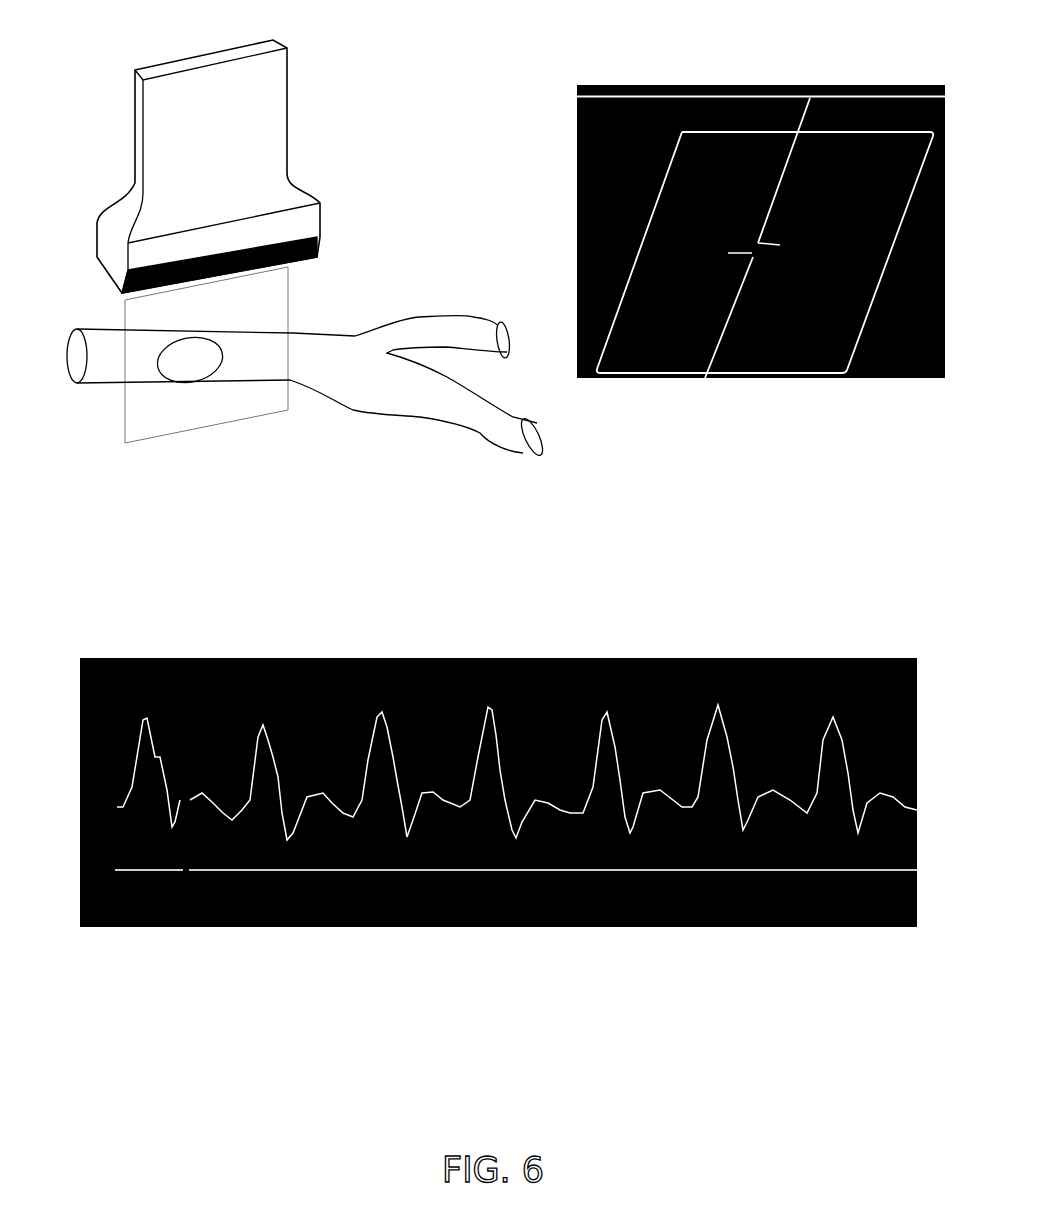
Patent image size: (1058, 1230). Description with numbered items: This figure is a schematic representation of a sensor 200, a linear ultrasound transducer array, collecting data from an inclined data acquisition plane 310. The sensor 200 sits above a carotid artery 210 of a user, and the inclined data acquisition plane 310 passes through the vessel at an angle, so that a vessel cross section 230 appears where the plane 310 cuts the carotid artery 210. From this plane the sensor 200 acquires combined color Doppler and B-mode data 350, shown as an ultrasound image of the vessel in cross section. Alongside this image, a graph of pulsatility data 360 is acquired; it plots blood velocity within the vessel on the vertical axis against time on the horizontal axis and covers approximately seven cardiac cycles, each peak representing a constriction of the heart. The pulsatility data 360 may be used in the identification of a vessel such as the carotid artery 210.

The sensor 200 is at (287, 102).
The carotid artery 210 is at (95, 400).
The vessel cross section 230 is at (172, 387).
The inclined data acquisition plane 310 is at (288, 307).
The combined color Doppler and B-mode data 350 is at (948, 398).
The graph of pulsatility data 360 is at (920, 943).